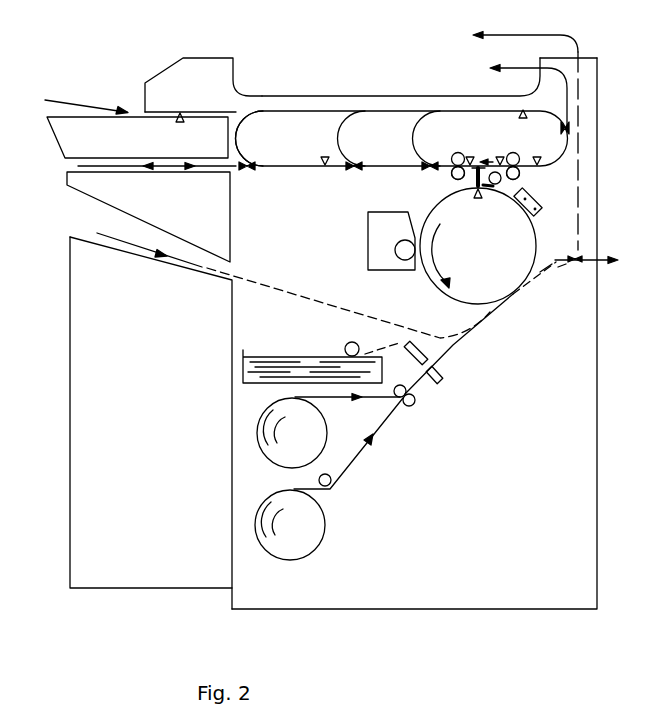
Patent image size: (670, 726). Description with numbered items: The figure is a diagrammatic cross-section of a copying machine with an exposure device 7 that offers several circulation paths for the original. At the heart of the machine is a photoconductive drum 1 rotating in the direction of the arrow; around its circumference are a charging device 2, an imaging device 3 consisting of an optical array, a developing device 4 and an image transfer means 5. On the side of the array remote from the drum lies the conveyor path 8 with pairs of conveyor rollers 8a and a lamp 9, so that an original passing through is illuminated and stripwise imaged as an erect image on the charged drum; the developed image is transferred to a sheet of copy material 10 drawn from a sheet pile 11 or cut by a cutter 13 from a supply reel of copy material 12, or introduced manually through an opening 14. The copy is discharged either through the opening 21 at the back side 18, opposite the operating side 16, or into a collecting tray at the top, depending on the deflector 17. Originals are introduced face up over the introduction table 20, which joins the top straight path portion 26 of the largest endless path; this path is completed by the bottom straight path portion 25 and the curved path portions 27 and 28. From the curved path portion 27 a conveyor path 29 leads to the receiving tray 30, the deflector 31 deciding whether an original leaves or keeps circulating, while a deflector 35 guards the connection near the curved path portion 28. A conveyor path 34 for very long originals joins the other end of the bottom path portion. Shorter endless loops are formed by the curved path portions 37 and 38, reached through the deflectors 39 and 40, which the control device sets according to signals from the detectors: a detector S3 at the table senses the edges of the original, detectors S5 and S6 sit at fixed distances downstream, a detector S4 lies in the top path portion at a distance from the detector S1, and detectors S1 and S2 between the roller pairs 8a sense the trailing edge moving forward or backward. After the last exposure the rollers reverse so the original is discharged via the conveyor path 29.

The photoconductive drum 1 is at (440, 287).
The charging device 2 is at (542, 208).
The imaging device 3 is at (473, 184).
The developing device 4 is at (375, 254).
The image transfer means 5 is at (517, 302).
The exposure device 7 is at (478, 198).
The conveyor path 8 is at (546, 172).
The pairs of conveyor rollers 8a is at (452, 175).
The lamp 9 is at (496, 185).
The sheet of copy material 10 is at (550, 268).
The sheet pile 11 is at (293, 360).
The supply reel of copy material 12 is at (273, 503).
The cutter 13 is at (444, 368).
The opening 14 is at (85, 237).
The operating side 16 is at (68, 386).
The deflector 17 is at (575, 257).
The back side 18 is at (597, 363).
The introduction table 20 is at (98, 113).
The opening 21 is at (598, 263).
The bottom straight path portion 25 is at (306, 172).
The top straight path portion 26 is at (321, 112).
The curved path portion 27 is at (562, 152).
The curved path portion 28 is at (243, 138).
The conveyor path 29 is at (568, 95).
The receiving tray 30 is at (396, 96).
The deflector 31 is at (568, 128).
The conveyor path 34 is at (162, 168).
The deflector 35 is at (250, 176).
The curved path portion 37 is at (346, 132).
The curved path portion 38 is at (421, 128).
The deflector 39 is at (352, 172).
The deflector 40 is at (425, 170).
The detector S1 is at (470, 157).
The detector S2 is at (500, 157).
The detector S3 is at (180, 124).
The detector S4 is at (519, 113).
The detector S5 is at (537, 157).
The detector S6 is at (325, 157).